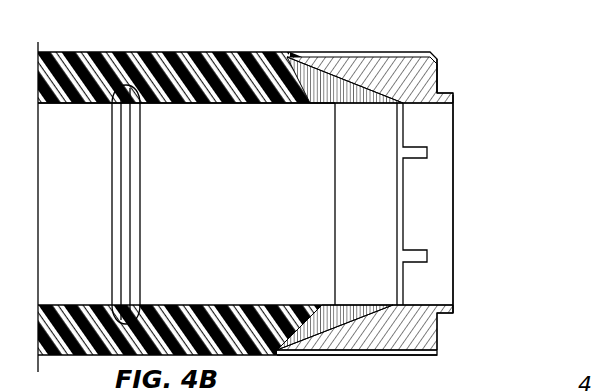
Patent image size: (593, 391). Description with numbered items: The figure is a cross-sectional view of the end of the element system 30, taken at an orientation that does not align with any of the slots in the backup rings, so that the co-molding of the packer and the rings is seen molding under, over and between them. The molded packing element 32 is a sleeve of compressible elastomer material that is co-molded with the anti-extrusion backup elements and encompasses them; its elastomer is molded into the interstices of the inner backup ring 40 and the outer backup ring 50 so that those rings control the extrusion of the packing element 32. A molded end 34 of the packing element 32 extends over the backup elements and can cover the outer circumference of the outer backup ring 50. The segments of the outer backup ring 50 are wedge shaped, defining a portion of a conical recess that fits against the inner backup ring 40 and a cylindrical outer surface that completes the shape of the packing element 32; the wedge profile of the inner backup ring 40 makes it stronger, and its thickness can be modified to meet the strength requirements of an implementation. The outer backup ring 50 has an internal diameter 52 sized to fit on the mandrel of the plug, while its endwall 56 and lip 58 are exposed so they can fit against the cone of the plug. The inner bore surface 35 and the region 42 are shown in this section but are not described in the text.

The element system 30 is at (543, 71).
The molded packing element 32 is at (125, 52).
The molded end 34 is at (413, 355).
The inner bore surface 35 is at (189, 114).
The inner backup ring 40 is at (307, 60).
The tapered wedge member 42 is at (355, 305).
The outer backup ring 50 is at (388, 62).
The internal diameter 52 is at (440, 304).
The endwall 56 is at (438, 60).
The lip 58 is at (455, 97).